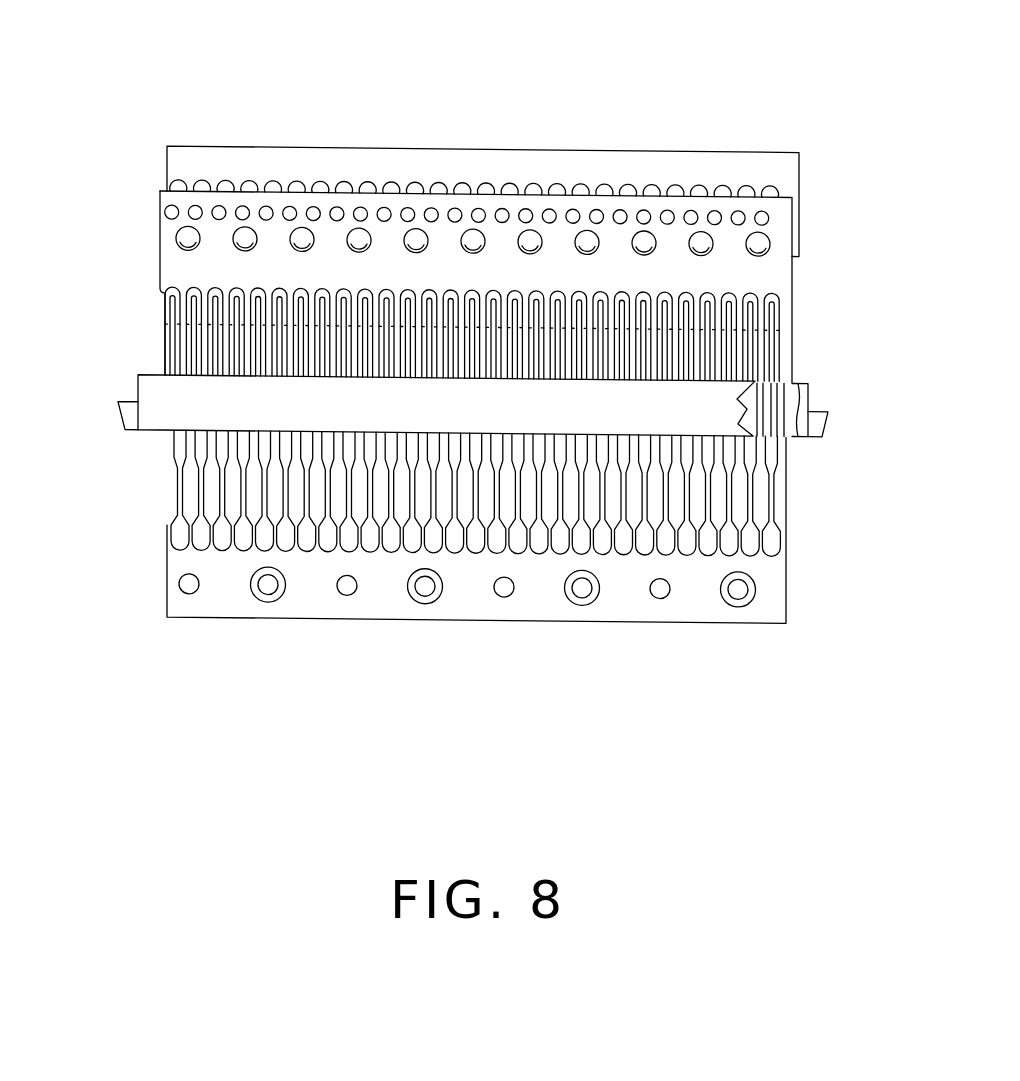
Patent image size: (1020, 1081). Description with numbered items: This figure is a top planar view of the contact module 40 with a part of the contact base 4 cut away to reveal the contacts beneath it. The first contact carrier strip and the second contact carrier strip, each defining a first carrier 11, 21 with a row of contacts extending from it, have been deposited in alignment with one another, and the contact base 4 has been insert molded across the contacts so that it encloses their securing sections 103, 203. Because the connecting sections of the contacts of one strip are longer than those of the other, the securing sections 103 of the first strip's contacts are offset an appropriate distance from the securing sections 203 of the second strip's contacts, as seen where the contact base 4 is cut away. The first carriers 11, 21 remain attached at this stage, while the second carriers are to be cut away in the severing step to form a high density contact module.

The contact module 40 is at (473, 316).
The first carrier 21 is at (483, 201).
The first carrier 11 is at (476, 402).
The contact base 4 is at (473, 406).
The securing section 203 is at (474, 361).
The securing section 103 is at (475, 493).